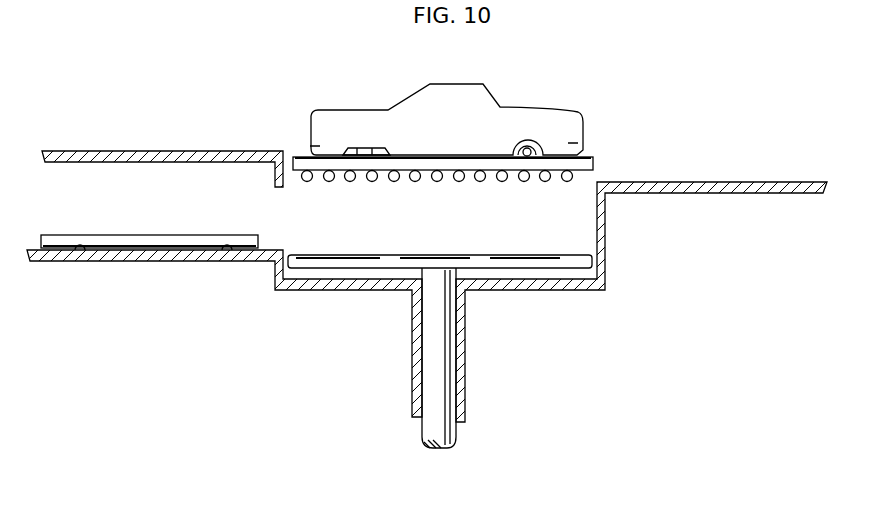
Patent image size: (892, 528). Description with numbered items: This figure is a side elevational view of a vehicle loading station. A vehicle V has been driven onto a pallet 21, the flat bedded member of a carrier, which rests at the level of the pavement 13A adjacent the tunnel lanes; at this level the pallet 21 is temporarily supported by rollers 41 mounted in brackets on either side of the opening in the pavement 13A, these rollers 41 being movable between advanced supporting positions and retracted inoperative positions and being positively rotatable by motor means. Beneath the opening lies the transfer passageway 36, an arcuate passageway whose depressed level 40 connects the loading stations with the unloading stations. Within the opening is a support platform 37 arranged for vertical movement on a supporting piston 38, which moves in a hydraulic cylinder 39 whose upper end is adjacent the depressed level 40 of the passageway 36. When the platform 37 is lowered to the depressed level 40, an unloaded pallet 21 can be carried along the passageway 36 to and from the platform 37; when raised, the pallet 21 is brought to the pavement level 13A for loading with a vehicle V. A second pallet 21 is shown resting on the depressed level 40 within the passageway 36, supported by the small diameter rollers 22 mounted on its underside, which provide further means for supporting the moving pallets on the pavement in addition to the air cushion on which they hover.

The pavement 13A is at (178, 151).
The vehicle V is at (425, 100).
The pallet 21 is at (205, 235).
The rollers 41 is at (355, 183).
The transfer passageway 36 is at (198, 216).
The small diameter rollers 22 is at (80, 252).
The depressed level 40 is at (240, 253).
The support platform 37 is at (486, 255).
The supporting piston 38 is at (445, 337).
The hydraulic cylinder 39 is at (462, 385).